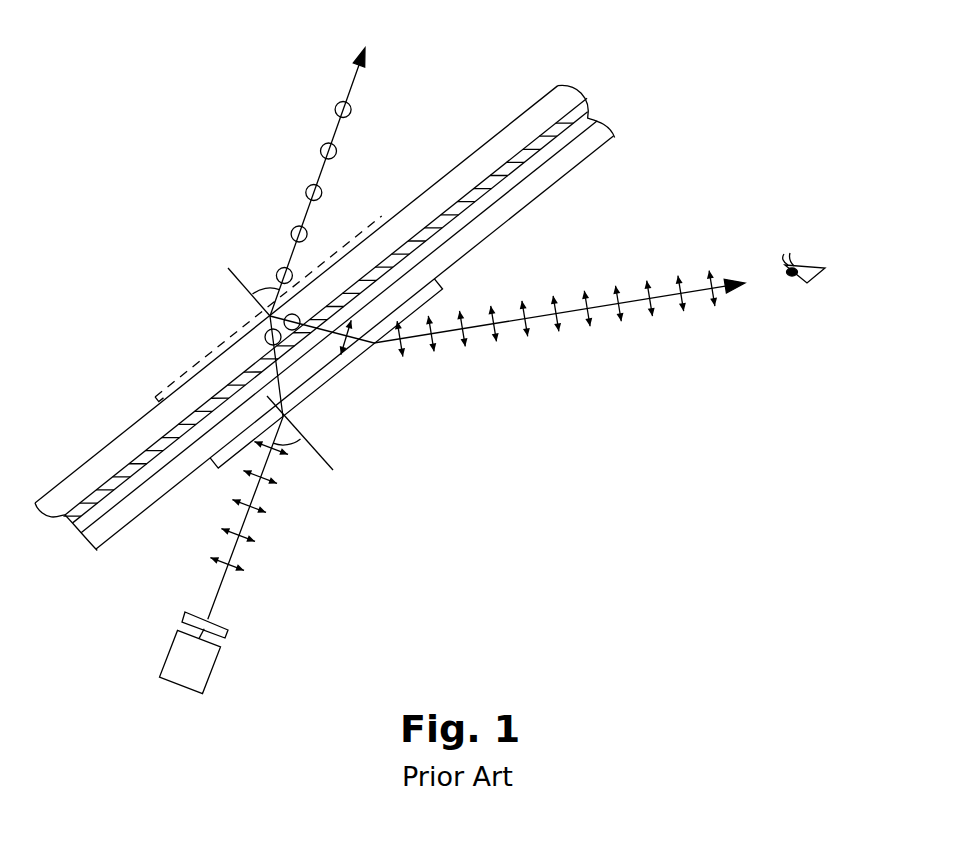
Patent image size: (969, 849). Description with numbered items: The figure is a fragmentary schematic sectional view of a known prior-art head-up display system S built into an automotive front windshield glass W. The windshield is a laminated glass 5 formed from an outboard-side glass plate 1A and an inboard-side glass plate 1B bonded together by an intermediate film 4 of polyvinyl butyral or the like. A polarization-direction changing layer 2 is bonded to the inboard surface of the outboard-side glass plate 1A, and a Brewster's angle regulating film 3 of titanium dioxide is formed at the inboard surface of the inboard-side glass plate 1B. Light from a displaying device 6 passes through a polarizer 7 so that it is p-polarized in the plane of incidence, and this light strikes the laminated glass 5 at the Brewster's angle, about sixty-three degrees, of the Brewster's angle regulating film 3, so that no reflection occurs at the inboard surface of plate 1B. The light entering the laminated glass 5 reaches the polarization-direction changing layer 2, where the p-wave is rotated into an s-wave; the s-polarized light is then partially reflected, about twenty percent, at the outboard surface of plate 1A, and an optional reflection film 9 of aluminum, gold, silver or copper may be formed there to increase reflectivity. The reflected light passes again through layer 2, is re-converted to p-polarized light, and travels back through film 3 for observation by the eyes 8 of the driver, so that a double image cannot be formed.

The outboard-side glass plate 1A is at (531, 118).
The inboard-side glass plate 1B is at (596, 148).
The polarization-direction changing layer 2 is at (383, 262).
The Brewster's angle regulating film 3 is at (445, 290).
The intermediate film 4 is at (590, 113).
The laminated glass 5 is at (603, 88).
The displaying device 6 is at (215, 662).
The polarizer 7 is at (229, 630).
The eyes 8 is at (807, 285).
The reflection film 9 is at (192, 367).
The automotive front windshield glass W is at (89, 460).
The HUD system S is at (485, 484).